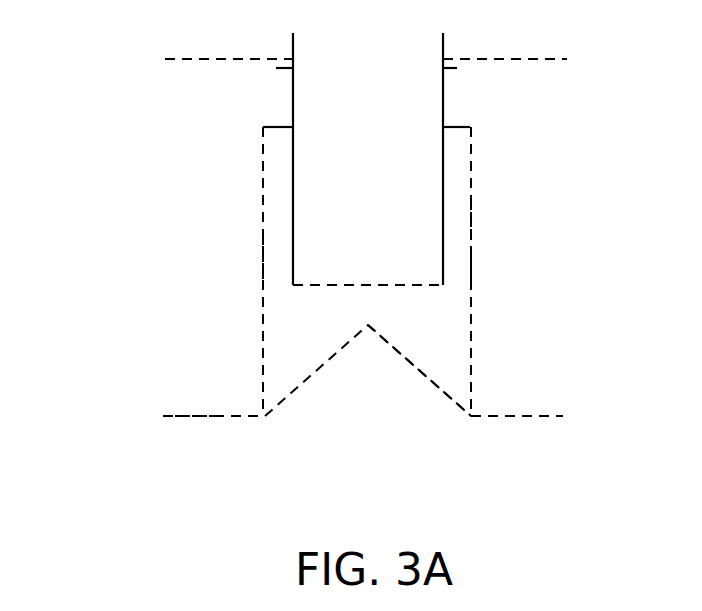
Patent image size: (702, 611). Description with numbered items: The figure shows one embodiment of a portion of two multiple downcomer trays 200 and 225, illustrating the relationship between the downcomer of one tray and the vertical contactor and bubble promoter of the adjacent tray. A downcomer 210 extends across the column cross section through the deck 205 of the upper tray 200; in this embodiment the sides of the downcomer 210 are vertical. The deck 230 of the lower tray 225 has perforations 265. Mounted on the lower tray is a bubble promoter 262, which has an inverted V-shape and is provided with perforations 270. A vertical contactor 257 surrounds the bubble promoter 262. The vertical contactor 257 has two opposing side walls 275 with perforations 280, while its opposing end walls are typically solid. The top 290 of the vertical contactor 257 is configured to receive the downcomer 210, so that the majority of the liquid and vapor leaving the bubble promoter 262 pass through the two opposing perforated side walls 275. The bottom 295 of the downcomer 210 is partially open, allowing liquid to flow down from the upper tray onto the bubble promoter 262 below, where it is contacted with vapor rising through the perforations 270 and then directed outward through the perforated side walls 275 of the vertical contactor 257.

The tray 200 is at (153, 58).
The deck 205 is at (196, 59).
The downcomer 210 is at (443, 85).
The tray 225 is at (145, 413).
The deck 230 is at (197, 416).
The vertical contactor 257 is at (471, 273).
The bubble promoter 262 is at (402, 362).
The perforations 265 is at (207, 416).
The perforations 270 is at (288, 405).
The side walls 275 is at (263, 180).
The perforations 280 is at (263, 257).
The top 290 is at (263, 127).
The bottom 295 is at (325, 285).